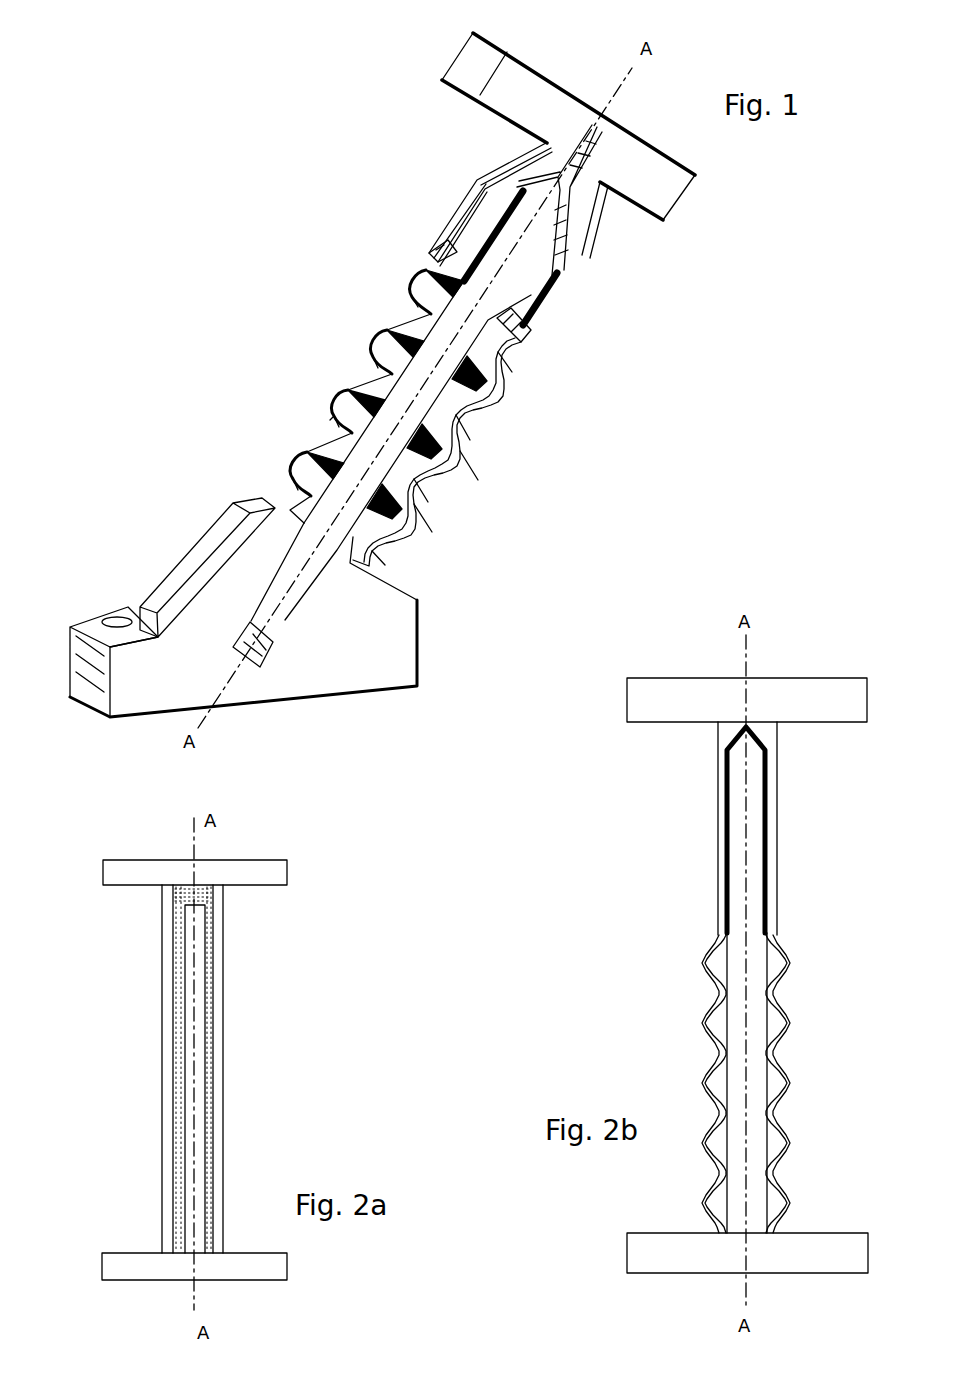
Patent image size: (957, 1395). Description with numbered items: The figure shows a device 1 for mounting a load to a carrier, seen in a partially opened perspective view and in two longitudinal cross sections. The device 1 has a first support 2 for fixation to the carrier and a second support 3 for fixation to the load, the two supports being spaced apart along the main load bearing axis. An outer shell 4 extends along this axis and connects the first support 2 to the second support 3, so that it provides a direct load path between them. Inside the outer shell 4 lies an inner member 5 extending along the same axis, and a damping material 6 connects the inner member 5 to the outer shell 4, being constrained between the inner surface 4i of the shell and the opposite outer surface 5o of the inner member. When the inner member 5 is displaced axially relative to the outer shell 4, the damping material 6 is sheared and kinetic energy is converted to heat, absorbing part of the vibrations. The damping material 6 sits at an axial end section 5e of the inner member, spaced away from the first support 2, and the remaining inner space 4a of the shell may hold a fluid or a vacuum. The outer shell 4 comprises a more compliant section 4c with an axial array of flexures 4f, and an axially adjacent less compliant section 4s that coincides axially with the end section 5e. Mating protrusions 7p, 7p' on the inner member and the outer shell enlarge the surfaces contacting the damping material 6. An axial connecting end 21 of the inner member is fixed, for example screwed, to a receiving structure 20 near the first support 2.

In FIG. 1, the device 1 is at (104, 214).
In FIG. 2A, the device 1 is at (304, 990).
In FIG. 2B, the device 1 is at (578, 912).
In FIG. 1, the first support 2 is at (124, 540).
In FIG. 2A, the first support 2 is at (108, 1268).
In FIG. 2B, the first support 2 is at (652, 1252).
In FIG. 1, the second support 3 is at (418, 62).
In FIG. 2A, the second support 3 is at (272, 872).
In FIG. 2B, the second support 3 is at (852, 703).
In FIG. 1, the outer shell 4 is at (280, 260).
In FIG. 2A, the outer shell 4 is at (168, 1180).
In FIG. 2B, the outer shell 4 is at (718, 938).
In FIG. 1, the inner space 4a is at (345, 410).
In FIG. 2A, the inner space 4a is at (175, 1244).
In FIG. 2B, the inner space 4a is at (720, 1075).
In FIG. 1, the more compliant section 4c is at (383, 370).
In FIG. 2B, the more compliant section 4c is at (710, 1008).
In FIG. 1, the flexure 4f is at (420, 500).
In FIG. 2B, the flexure 4f is at (792, 989).
In FIG. 1, the inner surface 4i is at (540, 297).
In FIG. 2A, the inner surface 4i is at (205, 980).
In FIG. 2B, the inner surface 4i is at (730, 896).
In FIG. 1, the less compliant section 4s is at (487, 200).
In FIG. 2B, the less compliant section 4s is at (718, 837).
In FIG. 1, the inner member 5 is at (425, 412).
In FIG. 2A, the inner member 5 is at (200, 1100).
In FIG. 2B, the inner member 5 is at (760, 1092).
In FIG. 1, the axial end section 5e is at (540, 262).
In FIG. 2A, the axial end section 5e is at (210, 934).
In FIG. 2B, the axial end section 5e is at (757, 802).
In FIG. 1, the outer surface 5o is at (575, 312).
In FIG. 2A, the outer surface 5o is at (212, 1078).
In FIG. 1, the damping material 6 is at (578, 245).
In FIG. 2A, the damping material 6 is at (212, 1030).
In FIG. 2B, the damping material 6 is at (767, 910).
In FIG. 1, the protrusions 7p is at (543, 353).
In FIG. 1, the protrusions 7p' is at (389, 236).
In FIG. 1, the receiving structure 20 is at (250, 566).
In FIG. 1, the connecting end 21 is at (292, 620).